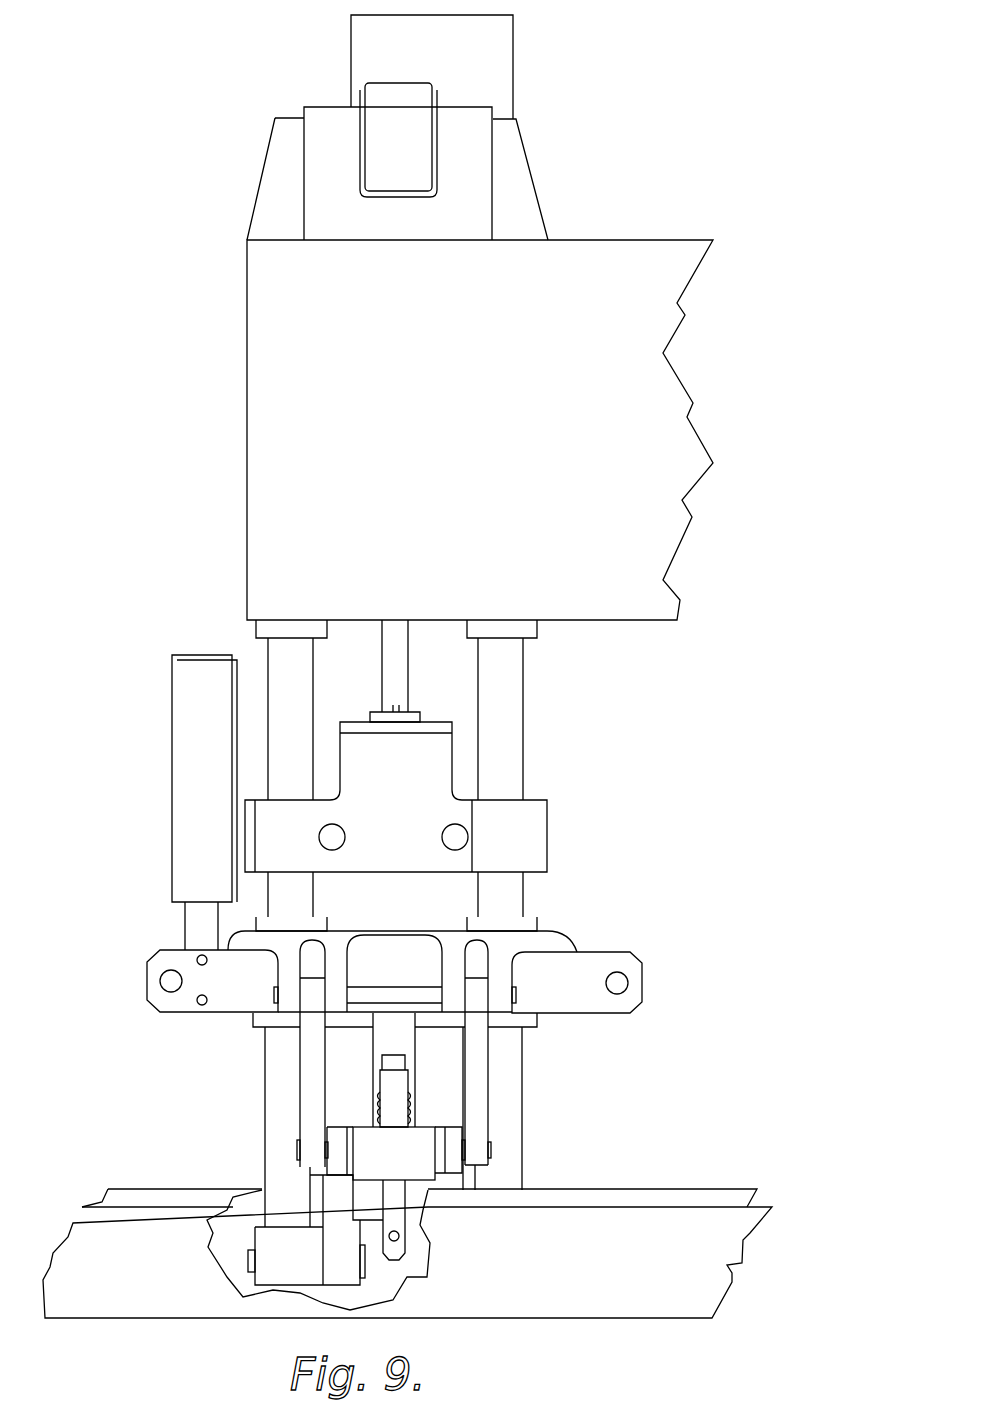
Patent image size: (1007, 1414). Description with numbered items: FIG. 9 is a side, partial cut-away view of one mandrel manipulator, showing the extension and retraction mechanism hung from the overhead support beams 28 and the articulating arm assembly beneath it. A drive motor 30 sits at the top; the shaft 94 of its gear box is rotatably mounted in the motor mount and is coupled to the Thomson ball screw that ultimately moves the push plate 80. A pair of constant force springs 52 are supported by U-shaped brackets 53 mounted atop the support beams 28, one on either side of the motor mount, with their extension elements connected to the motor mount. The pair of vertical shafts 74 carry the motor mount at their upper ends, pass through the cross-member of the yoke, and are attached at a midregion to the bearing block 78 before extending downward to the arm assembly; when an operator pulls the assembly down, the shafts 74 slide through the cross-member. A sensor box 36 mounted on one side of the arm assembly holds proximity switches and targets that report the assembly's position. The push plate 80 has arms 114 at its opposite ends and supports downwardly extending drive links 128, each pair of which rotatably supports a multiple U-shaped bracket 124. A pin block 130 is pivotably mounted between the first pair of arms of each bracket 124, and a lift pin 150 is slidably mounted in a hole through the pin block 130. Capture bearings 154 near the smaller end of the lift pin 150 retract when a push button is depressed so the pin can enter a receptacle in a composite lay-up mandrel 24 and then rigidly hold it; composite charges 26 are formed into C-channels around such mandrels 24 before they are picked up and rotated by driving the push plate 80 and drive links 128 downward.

The drive motor 30 is at (505, 57).
The constant force springs 52 is at (370, 142).
The U-shaped brackets 53 is at (313, 200).
The support beams 28 is at (253, 447).
The vertical shafts 74 is at (273, 655).
The shaft 94 is at (407, 672).
The bearing block 78 is at (552, 837).
The sensor box 36 is at (172, 773).
The push plate 80 is at (628, 944).
The arms 114 is at (638, 988).
The drive links 128 is at (303, 1042).
The lift pin 150 is at (388, 1097).
The pin block 130 is at (427, 1135).
The multiple U-shaped bracket 124 is at (317, 1170).
The capture bearings 154 is at (402, 1243).
The composite lay-up mandrels 24 is at (747, 1186).
The composite charges 26 is at (750, 1235).